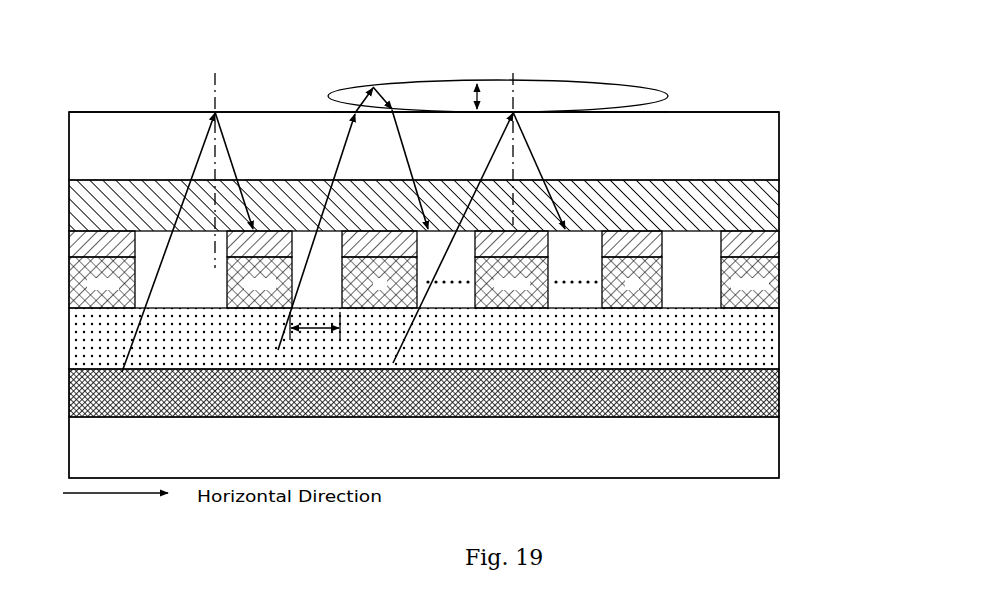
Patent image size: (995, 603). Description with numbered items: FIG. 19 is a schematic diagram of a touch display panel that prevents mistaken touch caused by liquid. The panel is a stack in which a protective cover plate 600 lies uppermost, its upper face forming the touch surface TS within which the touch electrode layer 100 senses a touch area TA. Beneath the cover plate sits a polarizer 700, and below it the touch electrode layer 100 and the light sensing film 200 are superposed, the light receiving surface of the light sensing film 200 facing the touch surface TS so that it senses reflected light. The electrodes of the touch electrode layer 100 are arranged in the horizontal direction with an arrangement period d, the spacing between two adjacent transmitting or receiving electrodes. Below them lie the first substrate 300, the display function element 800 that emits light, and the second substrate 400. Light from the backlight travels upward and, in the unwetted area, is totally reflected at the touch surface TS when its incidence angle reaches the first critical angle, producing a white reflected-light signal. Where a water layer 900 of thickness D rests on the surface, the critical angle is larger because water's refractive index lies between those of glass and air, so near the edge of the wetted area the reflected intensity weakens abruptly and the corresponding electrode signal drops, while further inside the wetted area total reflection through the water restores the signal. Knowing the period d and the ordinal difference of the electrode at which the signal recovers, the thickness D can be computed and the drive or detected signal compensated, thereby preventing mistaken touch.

The water layer 900 is at (657, 92).
The touch surface TS is at (708, 112).
The touch area TA is at (499, 101).
The thickness of the water layer D is at (472, 105).
The protective cover plate 600 is at (780, 147).
The polarizer 700 is at (780, 212).
The light sensing film 200 is at (778, 243).
The touch electrode layer 100 is at (780, 272).
The first substrate 300 is at (780, 345).
The display function element 800 is at (780, 400).
The second substrate 400 is at (780, 455).
The arrangement period of the Tx/Rx d is at (315, 333).